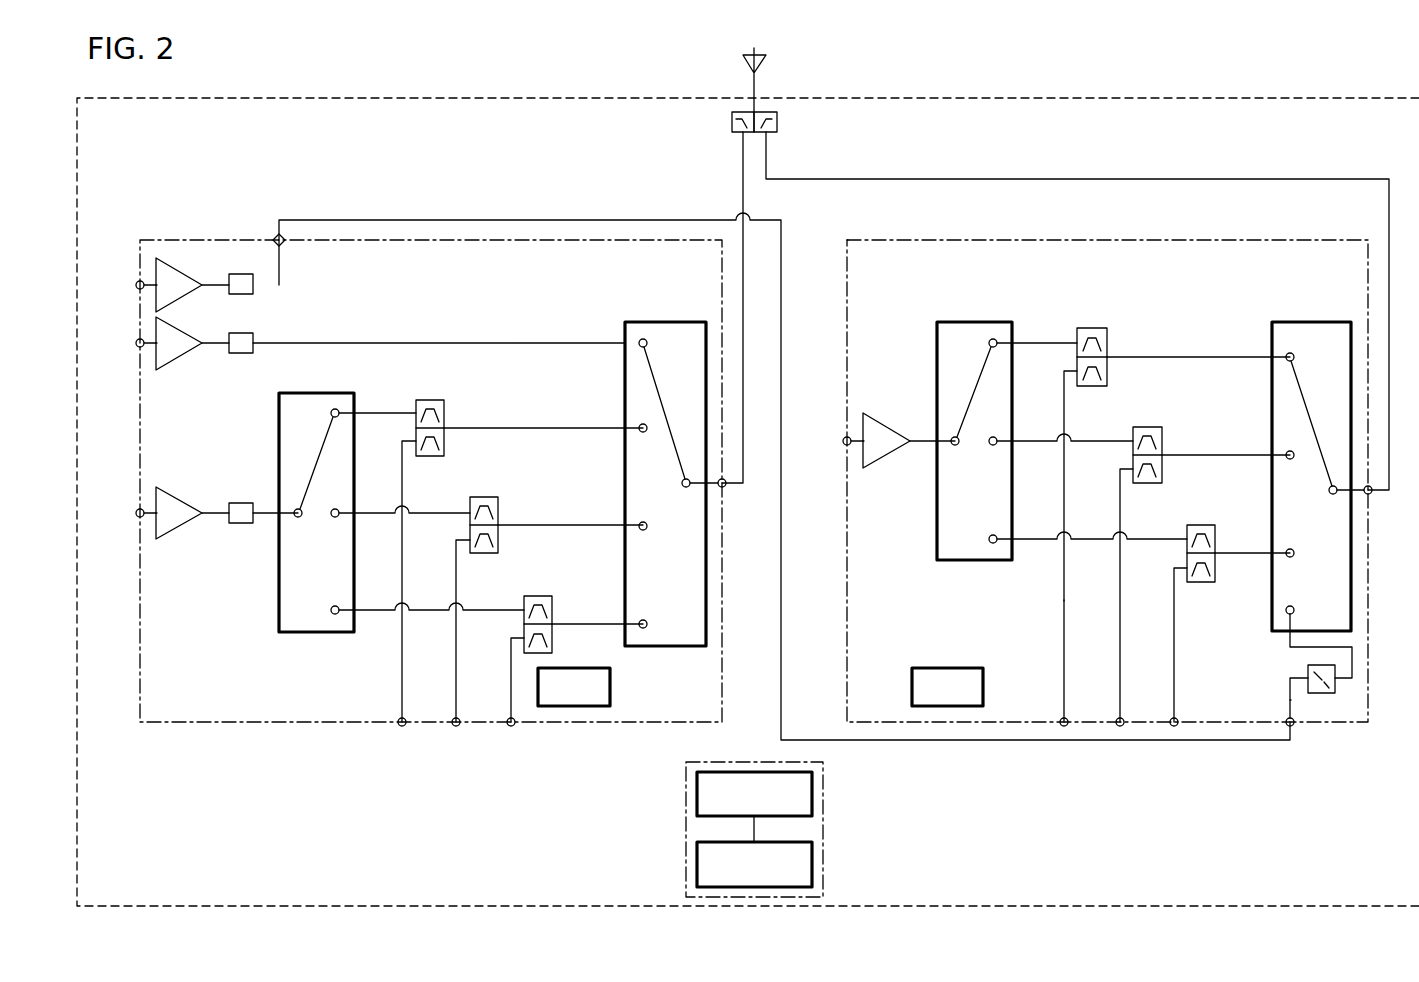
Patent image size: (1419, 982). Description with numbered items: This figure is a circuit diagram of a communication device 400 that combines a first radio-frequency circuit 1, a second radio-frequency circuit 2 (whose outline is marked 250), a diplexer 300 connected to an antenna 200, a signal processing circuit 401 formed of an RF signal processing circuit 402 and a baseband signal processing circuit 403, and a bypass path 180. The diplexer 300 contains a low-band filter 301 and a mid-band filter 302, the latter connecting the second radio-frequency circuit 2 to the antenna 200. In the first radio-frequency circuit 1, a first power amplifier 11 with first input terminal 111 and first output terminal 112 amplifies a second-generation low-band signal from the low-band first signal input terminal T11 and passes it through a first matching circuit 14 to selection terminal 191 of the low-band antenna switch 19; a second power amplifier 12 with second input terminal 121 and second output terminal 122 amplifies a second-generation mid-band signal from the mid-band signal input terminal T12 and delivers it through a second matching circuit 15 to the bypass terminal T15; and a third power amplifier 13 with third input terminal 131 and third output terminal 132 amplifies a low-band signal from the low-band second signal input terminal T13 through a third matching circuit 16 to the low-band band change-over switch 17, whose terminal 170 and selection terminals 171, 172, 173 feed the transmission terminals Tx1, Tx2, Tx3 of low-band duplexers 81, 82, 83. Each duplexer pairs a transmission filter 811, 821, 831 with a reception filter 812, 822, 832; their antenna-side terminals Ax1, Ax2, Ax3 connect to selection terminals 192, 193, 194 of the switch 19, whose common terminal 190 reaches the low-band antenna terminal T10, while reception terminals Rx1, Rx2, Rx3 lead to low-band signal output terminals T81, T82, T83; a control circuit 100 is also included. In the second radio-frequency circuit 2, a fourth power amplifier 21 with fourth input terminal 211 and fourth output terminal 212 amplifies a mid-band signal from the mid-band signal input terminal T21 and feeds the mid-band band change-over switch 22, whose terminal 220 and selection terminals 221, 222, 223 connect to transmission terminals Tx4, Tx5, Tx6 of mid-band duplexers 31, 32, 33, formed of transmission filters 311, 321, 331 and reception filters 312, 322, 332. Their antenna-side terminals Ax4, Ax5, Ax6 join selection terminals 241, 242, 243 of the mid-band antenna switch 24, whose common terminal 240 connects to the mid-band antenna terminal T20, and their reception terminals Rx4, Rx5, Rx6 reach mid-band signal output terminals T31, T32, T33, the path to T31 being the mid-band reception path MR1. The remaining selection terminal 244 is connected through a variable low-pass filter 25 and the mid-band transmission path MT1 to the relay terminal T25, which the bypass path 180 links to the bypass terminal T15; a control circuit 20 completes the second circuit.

The first radio-frequency circuit 1 is at (205, 240).
The second radio-frequency circuit 2 is at (847, 240).
The first power amplifier 11 is at (160, 356).
The second power amplifier 12 is at (162, 270).
The third power amplifier 13 is at (159, 515).
The first matching circuit 14 is at (252, 353).
The second matching circuit 15 is at (253, 292).
The third matching circuit 16 is at (242, 522).
The low-band band change-over switch 17 is at (292, 516).
The low-band antenna switch 19 is at (646, 462).
The control circuit 20 is at (973, 688).
The fourth power amplifier 21 is at (875, 461).
The mid-band band change-over switch 22 is at (954, 444).
The mid-band antenna switch 24 is at (1295, 478).
The variable low-pass filter 25 is at (1308, 672).
The mid-band duplexer 31 is at (1120, 336).
The mid-band duplexer 32 is at (1172, 437).
The mid-band duplexer 33 is at (1222, 560).
The low-band duplexer 81 is at (453, 407).
The low-band duplexer 82 is at (507, 508).
The low-band duplexer 83 is at (560, 611).
The control circuit 100 is at (600, 690).
The first input terminal 111 is at (155, 340).
The first output terminal 112 is at (203, 347).
The second input terminal 121 is at (155, 280).
The second output terminal 122 is at (202, 287).
The third input terminal 131 is at (155, 510).
The third output terminal 132 is at (202, 522).
The common terminal of switch 17 170 is at (292, 505).
The selection terminal 171 is at (334, 405).
The selection terminal 172 is at (335, 522).
The selection terminal 173 is at (335, 618).
The bypass path 180 is at (455, 220).
The common terminal 190 is at (686, 487).
The selection terminal 191 is at (640, 338).
The selection terminal 192 is at (639, 425).
The selection terminal 193 is at (639, 523).
The selection terminal 194 is at (645, 621).
The antenna 200 is at (759, 53).
The fourth input terminal 211 is at (843, 437).
The fourth output terminal 212 is at (910, 445).
The common terminal of switch 22 220 is at (952, 437).
The selection terminal 221 is at (994, 337).
The selection terminal 222 is at (992, 447).
The selection terminal 223 is at (992, 545).
The common terminal 240 is at (1333, 494).
The selection terminal 241 is at (1287, 353).
The selection terminal 242 is at (1287, 453).
The selection terminal 243 is at (1295, 557).
The selection terminal 244 is at (1295, 607).
The module substrate 250 is at (975, 240).
The diplexer 300 is at (752, 147).
The low-band filter 301 is at (732, 123).
The mid-band filter 302 is at (777, 123).
The transmission filter 311 is at (1107, 333).
The reception filter 312 is at (1107, 367).
The transmission filter 321 is at (1162, 427).
The reception filter 322 is at (1162, 465).
The transmission filter 331 is at (1215, 527).
The reception filter 332 is at (1202, 582).
The communication device 400 is at (1117, 98).
The signal processing circuit 401 is at (739, 829).
The RF signal processing circuit 402 is at (803, 793).
The baseband signal processing circuit 403 is at (803, 863).
The transmission filter 811 is at (443, 400).
The reception filter 812 is at (445, 435).
The transmission filter 821 is at (497, 497).
The reception filter 822 is at (498, 535).
The transmission filter 831 is at (550, 596).
The reception filter 832 is at (552, 637).
The low-band antenna terminal T10 is at (725, 488).
The low-band first signal input terminal T11 is at (137, 347).
The mid-band signal input terminal T12 is at (136, 283).
The low-band second signal input terminal T13 is at (137, 517).
The bypass terminal T15 is at (283, 245).
The mid-band antenna terminal T20 is at (1372, 497).
The mid-band signal input terminal T21 is at (843, 445).
The relay terminal T25 is at (1297, 727).
The mid-band signal output terminal T31 is at (1063, 730).
The mid-band signal output terminal T32 is at (1120, 730).
The mid-band signal output terminal T33 is at (1174, 730).
The low-band signal output terminal T81 is at (400, 728).
The low-band signal output terminal T82 is at (456, 728).
The low-band signal output terminal T83 is at (512, 728).
The transmission terminal Tx1 is at (415, 413).
The transmission terminal Tx2 is at (468, 512).
The transmission terminal Tx3 is at (523, 610).
The transmission terminal Tx4 is at (1077, 342).
The transmission terminal Tx5 is at (1130, 440).
The transmission terminal Tx6 is at (1186, 539).
The reception terminal Rx1 is at (415, 440).
The reception terminal Rx2 is at (468, 540).
The reception terminal Rx3 is at (523, 637).
The reception terminal Rx4 is at (1077, 370).
The reception terminal Rx5 is at (1132, 467).
The reception terminal Rx6 is at (1186, 568).
The antenna-side terminal Ax1 is at (447, 427).
The antenna-side terminal Ax2 is at (502, 523).
The antenna-side terminal Ax3 is at (553, 622).
The antenna-side terminal Ax4 is at (1108, 356).
The antenna-side terminal Ax5 is at (1162, 455).
The antenna-side terminal Ax6 is at (1217, 555).
The mid-band reception path MR1 is at (1064, 618).
The mid-band transmission path MT1 is at (1288, 695).